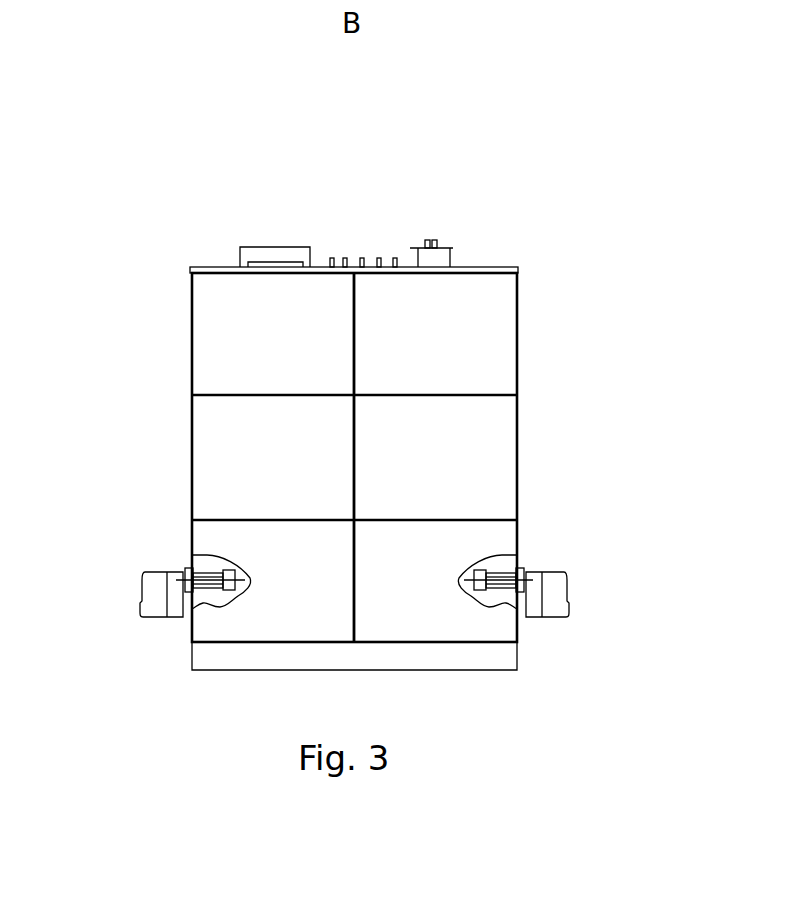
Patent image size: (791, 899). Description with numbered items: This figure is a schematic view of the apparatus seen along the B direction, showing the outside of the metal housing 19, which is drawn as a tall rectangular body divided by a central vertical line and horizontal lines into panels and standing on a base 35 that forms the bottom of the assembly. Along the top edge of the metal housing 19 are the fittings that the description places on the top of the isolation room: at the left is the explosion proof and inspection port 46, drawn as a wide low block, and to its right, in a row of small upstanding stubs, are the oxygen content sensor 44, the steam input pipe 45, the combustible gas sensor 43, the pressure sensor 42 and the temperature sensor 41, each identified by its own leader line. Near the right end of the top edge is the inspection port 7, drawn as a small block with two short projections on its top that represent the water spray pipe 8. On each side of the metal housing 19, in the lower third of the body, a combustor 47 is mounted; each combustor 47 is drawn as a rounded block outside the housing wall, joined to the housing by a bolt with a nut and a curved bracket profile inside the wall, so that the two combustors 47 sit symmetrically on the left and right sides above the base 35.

The metal housing 19 is at (228, 345).
The base 35 is at (220, 653).
The explosion proof and inspection port 46 is at (267, 255).
The steam input pipe 45 is at (346, 258).
The oxygen content sensor 44 is at (332, 257).
The combustible gas sensor 43 is at (362, 258).
The pressure sensor 42 is at (379, 258).
The temperature sensor 41 is at (395, 258).
The water spray pipe 8 is at (433, 240).
The inspection port 7 is at (443, 255).
The combustor 47 is at (157, 595).